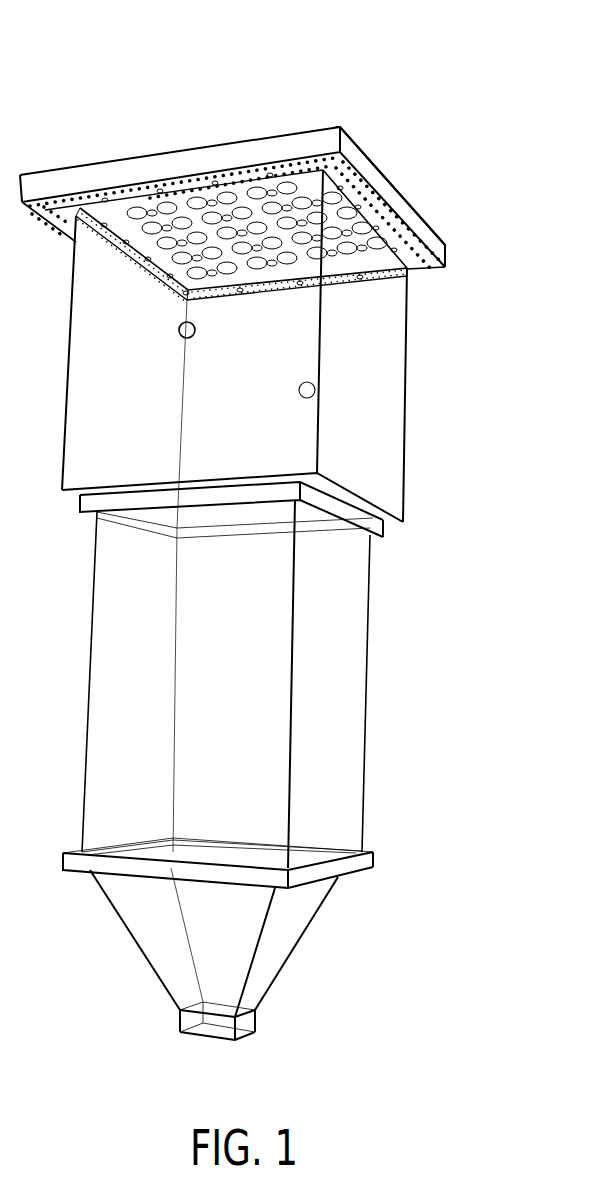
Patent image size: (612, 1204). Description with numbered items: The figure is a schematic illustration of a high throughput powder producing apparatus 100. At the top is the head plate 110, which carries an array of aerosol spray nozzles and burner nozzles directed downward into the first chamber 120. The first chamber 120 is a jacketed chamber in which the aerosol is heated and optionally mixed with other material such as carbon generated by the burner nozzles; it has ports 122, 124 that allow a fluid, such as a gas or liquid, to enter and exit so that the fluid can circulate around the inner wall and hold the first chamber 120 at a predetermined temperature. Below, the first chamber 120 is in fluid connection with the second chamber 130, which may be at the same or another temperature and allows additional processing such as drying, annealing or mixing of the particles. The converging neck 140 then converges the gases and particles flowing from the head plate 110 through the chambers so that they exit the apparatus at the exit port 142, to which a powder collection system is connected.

The apparatus 100 is at (378, 66).
The head plate 110 is at (388, 192).
The first chamber 120 is at (390, 383).
The port 122 is at (179, 333).
The port 124 is at (299, 392).
The second chamber 130 is at (357, 668).
The converging neck 140 is at (292, 933).
The exit port 142 is at (182, 1024).